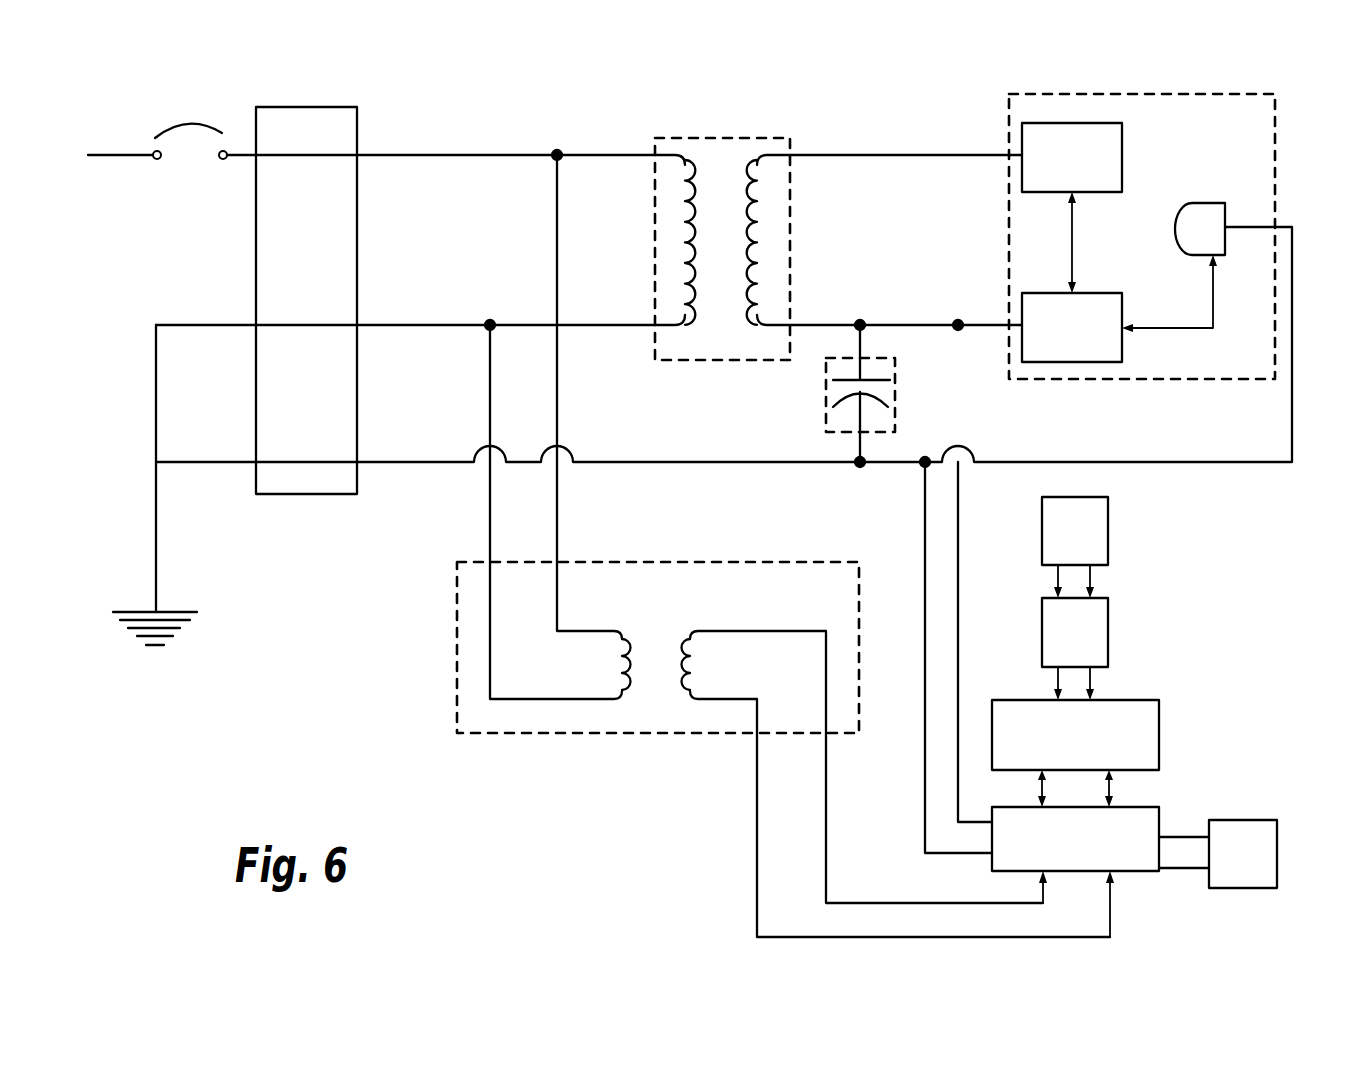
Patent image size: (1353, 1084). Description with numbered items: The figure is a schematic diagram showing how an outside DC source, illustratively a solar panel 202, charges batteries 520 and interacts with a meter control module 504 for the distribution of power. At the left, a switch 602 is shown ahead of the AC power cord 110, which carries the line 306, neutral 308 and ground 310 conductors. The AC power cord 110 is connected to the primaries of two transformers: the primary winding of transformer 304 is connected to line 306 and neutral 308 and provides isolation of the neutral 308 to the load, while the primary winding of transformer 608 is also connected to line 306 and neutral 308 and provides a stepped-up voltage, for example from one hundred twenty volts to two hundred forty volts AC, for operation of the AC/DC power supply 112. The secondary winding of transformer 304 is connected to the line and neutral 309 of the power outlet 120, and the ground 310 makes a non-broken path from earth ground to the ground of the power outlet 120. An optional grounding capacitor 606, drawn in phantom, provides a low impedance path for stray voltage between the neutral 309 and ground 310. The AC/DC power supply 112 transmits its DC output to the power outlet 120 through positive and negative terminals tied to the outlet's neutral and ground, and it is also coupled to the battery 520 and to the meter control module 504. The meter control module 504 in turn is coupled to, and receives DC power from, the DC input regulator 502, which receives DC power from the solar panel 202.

The switch 602 is at (156, 138).
The AC power cord 110 is at (358, 135).
The line 306 is at (503, 158).
The neutral 308 is at (400, 328).
The ground 310 is at (400, 465).
The transformer 304 is at (678, 362).
The neutral 309 is at (902, 324).
The grounding capacitor 606 is at (826, 398).
The power outlet 120 is at (1161, 381).
The solar panel 202 is at (1108, 531).
The DC input regulator 502 is at (1108, 628).
The meter control module 504 is at (1159, 724).
The AC/DC power supply 112 is at (1143, 807).
The batteries 520 is at (1253, 820).
The transformer 608 is at (566, 735).